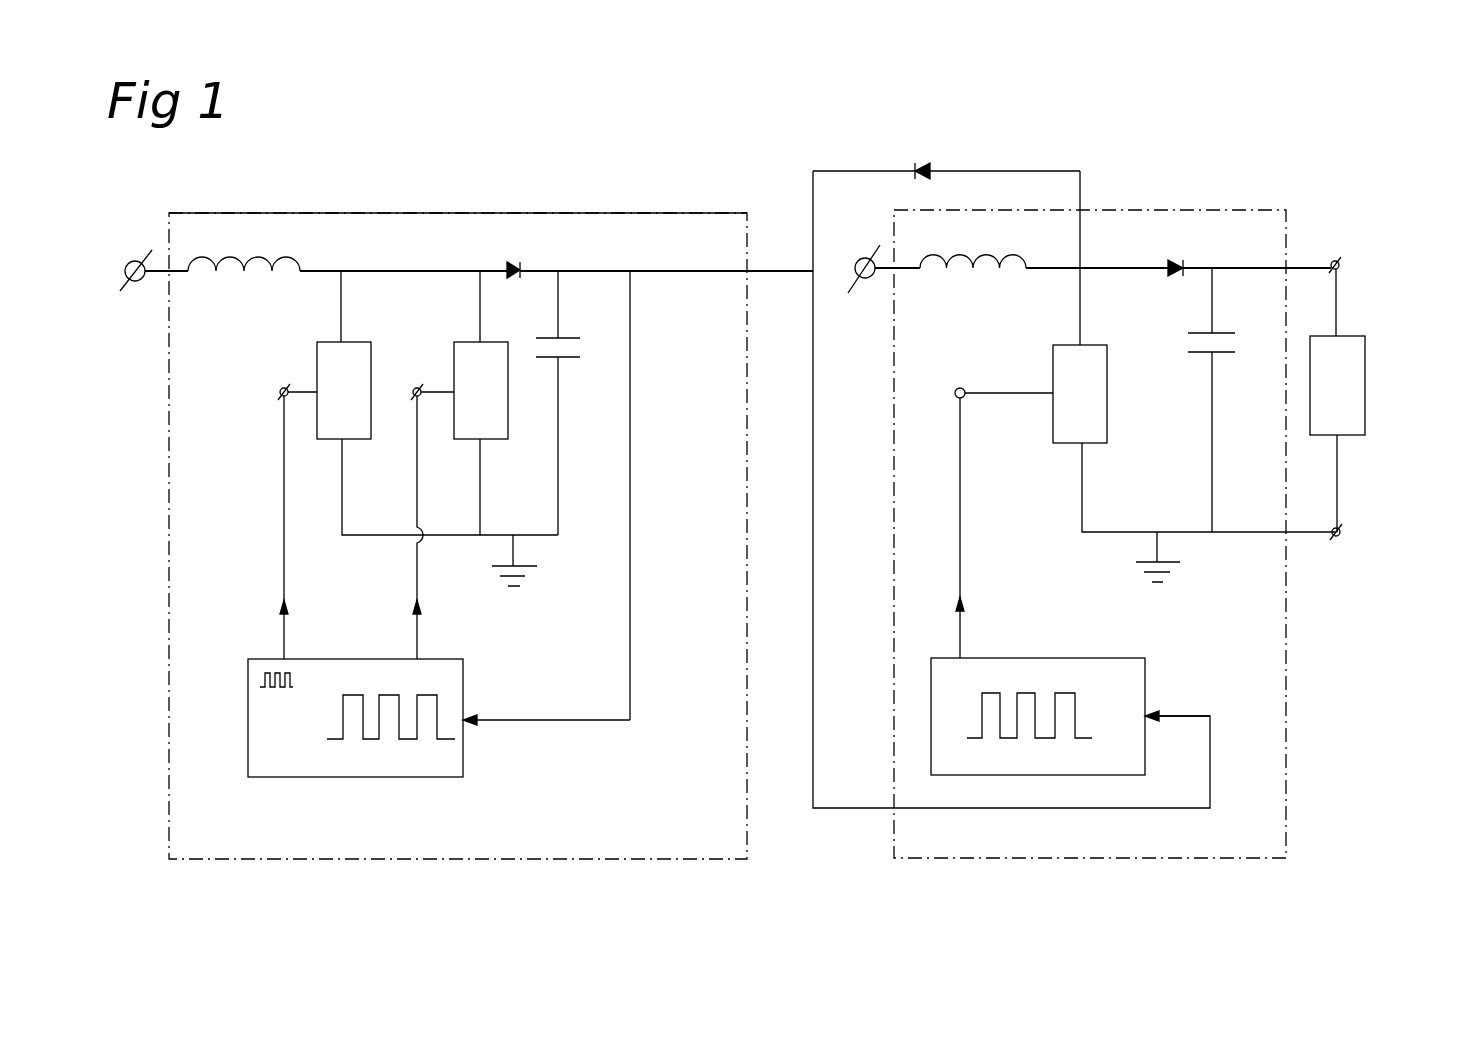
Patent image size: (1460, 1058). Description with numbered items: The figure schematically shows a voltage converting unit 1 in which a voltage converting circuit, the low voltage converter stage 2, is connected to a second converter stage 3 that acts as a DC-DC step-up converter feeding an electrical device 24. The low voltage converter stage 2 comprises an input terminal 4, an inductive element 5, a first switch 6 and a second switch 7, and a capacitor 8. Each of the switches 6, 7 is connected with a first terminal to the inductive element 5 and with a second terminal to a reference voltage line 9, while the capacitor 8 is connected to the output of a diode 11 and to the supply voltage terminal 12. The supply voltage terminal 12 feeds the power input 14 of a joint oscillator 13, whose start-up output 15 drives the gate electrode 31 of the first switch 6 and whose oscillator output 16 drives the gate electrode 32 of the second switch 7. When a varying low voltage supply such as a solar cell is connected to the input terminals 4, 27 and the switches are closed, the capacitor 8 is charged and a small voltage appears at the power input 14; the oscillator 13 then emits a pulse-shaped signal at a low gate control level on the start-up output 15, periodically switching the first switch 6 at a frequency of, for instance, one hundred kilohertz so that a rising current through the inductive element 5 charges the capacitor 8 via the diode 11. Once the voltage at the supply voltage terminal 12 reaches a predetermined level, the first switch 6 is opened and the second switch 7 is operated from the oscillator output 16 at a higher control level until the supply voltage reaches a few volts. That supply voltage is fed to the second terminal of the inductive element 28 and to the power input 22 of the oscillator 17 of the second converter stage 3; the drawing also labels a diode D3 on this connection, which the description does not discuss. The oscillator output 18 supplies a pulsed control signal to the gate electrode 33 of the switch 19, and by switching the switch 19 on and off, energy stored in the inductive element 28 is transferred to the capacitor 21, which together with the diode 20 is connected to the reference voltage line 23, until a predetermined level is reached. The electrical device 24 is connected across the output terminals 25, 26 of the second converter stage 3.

The voltage converting unit 1 is at (432, 188).
The low voltage converter stage 2 is at (477, 228).
The second converter stage 3 is at (1157, 218).
The input terminal 4 is at (135, 266).
The inductive element 5 is at (255, 268).
The first switch 6 is at (325, 355).
The second switch 7 is at (466, 348).
The capacitor 8 is at (568, 358).
The reference voltage line 9 is at (520, 538).
The diode 11 is at (510, 260).
The supply voltage terminal 12 is at (812, 268).
The joint oscillator 13 is at (330, 777).
The power input 14 is at (490, 722).
The start-up output 15 is at (284, 632).
The oscillator output 16 is at (417, 632).
The oscillator 17 is at (1035, 777).
The oscillator output 18 is at (960, 640).
The switch 19 is at (1058, 365).
The diode 20 is at (1175, 260).
The capacitor 21 is at (1205, 374).
The power input 22 is at (1180, 714).
The reference voltage line 23 is at (1185, 535).
The electrical device 24 is at (1350, 393).
The output terminal 25 is at (1338, 261).
The output terminal 26 is at (1337, 537).
The input terminal 27 is at (865, 258).
The inductive element 28 is at (990, 262).
The gate electrode 31 is at (280, 391).
The gate electrode 32 is at (414, 389).
The gate electrode 33 is at (1013, 396).
The diode D3 is at (921, 167).